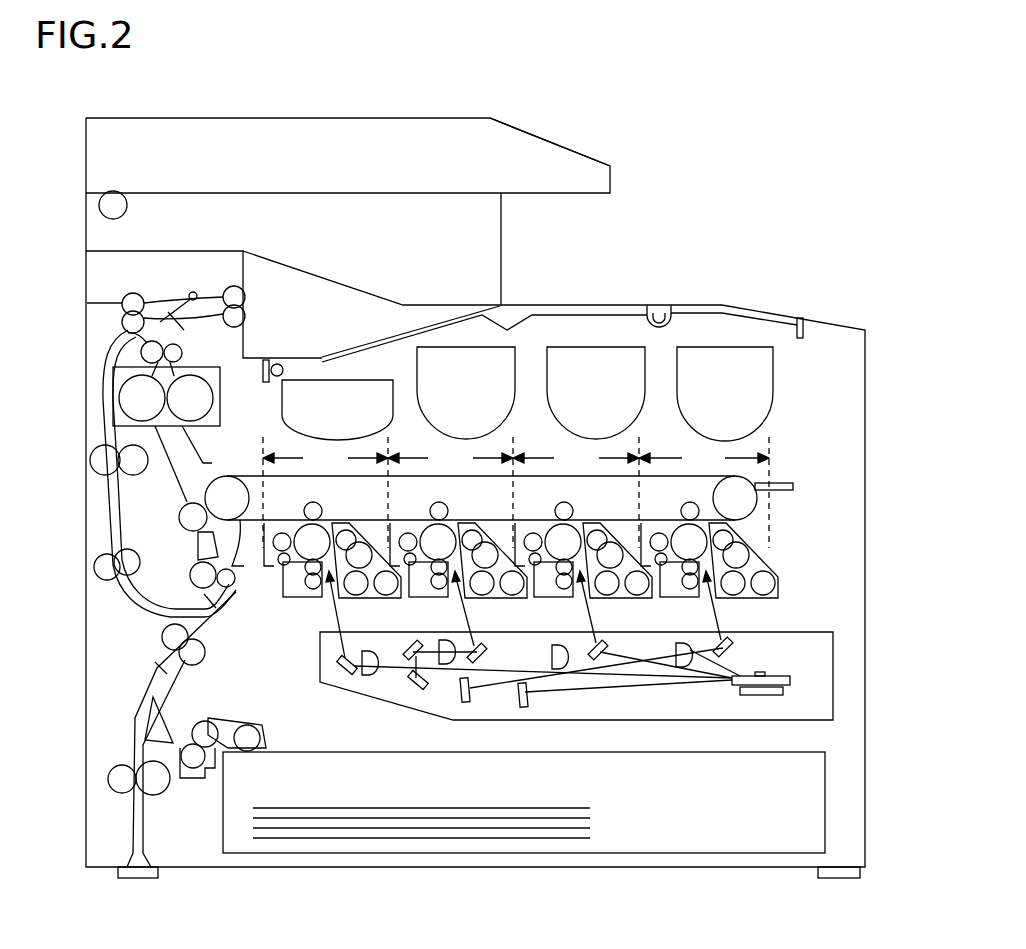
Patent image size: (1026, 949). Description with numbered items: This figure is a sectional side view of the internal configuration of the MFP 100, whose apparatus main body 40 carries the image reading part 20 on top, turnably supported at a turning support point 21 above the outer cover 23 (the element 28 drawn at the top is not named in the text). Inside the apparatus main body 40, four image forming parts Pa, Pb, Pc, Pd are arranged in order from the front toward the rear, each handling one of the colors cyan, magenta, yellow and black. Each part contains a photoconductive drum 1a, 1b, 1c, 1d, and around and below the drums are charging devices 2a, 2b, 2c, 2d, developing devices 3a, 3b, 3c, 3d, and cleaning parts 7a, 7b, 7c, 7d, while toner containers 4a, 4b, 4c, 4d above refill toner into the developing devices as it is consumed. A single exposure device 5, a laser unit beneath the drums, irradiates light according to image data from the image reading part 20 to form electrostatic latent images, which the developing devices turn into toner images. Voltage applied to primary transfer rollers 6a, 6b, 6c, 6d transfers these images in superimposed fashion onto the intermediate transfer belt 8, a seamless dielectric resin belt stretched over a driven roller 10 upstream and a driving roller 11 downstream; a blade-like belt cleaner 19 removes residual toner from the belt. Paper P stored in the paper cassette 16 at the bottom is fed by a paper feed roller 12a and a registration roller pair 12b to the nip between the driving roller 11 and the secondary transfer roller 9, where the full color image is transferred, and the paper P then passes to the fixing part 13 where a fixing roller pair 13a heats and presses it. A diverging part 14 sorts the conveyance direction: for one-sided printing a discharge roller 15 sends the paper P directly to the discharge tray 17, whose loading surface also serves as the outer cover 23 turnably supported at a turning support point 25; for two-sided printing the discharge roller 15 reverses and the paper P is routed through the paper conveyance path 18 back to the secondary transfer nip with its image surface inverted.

The photoconductive drum 1a is at (689, 542).
The photoconductive drum 1b is at (563, 542).
The photoconductive drum 1c is at (438, 542).
The photoconductive drum 1d is at (312, 542).
The charging device 2a is at (688, 591).
The charging device 2b is at (562, 591).
The charging device 2c is at (436, 591).
The charging device 2d is at (311, 591).
The developing device 3a is at (777, 568).
The developing device 3b is at (606, 530).
The developing device 3c is at (486, 530).
The developing device 3d is at (362, 530).
The toner container 4a is at (725, 394).
The toner container 4b is at (596, 393).
The toner container 4c is at (466, 393).
The toner container 4d is at (337, 410).
The exposure device 5 is at (833, 660).
The primary transfer roller 6a is at (682, 506).
The primary transfer roller 6b is at (556, 506).
The primary transfer roller 6c is at (432, 506).
The primary transfer roller 6d is at (306, 506).
The cleaning part 7a is at (644, 587).
The cleaning part 7b is at (518, 587).
The cleaning part 7c is at (389, 587).
The cleaning part 7d is at (275, 565).
The intermediate transfer belt 8 is at (757, 477).
The secondary transfer roller 9 is at (181, 521).
The driven roller 10 is at (748, 500).
The driving roller 11 is at (221, 476).
The paper feed roller 12a is at (242, 740).
The registration roller pair 12b is at (238, 621).
The fixing part 13 is at (112, 378).
The fixing roller pair 13a is at (126, 400).
The diverging part 14 is at (127, 303).
The discharge roller 15 is at (236, 305).
The paper cassette 16 is at (825, 797).
The discharge tray 17 is at (408, 316).
The paper conveyance path 18 is at (108, 492).
The belt cleaner 19 is at (800, 484).
The image reading part 20 is at (322, 128).
The turning support point 21 is at (108, 207).
The outer cover 23 is at (655, 305).
The turning support point 25 is at (279, 366).
The reading unit cover 28 is at (548, 136).
The apparatus main body 40 is at (865, 393).
The MFP 100 is at (700, 181).
The paper P is at (515, 805).
The image forming part Pa is at (704, 492).
The image forming part Pb is at (576, 492).
The image forming part Pc is at (450, 492).
The image forming part Pd is at (325, 492).